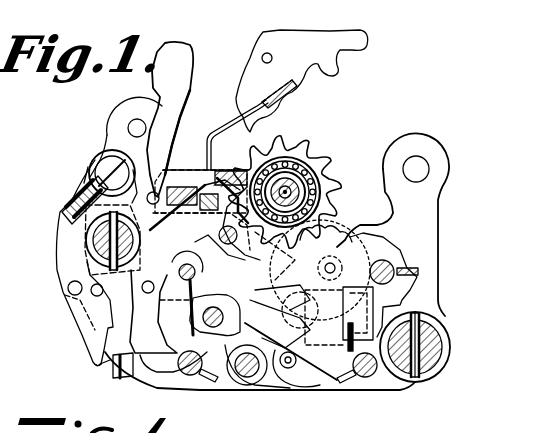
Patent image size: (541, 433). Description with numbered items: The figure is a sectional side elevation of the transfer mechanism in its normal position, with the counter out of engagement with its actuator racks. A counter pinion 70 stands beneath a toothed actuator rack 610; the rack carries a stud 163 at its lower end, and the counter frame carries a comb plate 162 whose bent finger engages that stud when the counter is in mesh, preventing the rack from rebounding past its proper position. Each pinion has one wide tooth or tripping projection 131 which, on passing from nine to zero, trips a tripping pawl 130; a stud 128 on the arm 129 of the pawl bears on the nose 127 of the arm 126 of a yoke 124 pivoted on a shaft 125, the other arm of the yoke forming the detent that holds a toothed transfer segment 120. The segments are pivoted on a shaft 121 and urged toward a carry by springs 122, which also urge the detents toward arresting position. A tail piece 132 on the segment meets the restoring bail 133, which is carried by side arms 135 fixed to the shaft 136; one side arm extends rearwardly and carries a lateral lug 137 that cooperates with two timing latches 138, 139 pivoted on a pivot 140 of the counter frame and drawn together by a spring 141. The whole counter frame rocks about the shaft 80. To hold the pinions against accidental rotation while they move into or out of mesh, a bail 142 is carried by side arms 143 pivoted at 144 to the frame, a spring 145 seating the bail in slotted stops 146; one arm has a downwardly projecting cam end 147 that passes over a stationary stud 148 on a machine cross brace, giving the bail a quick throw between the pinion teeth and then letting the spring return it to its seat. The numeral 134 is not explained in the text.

The actuator rack 610 is at (370, 47).
The stud 163 is at (263, 54).
The comb plate 162 is at (290, 94).
The counter pinion 70 is at (284, 137).
The tripping projection 131 is at (226, 180).
The tripping pawl 130 is at (178, 119).
The stud 128 is at (201, 185).
The nose 127 is at (153, 193).
The spring 141 is at (72, 305).
The timing latch 138 is at (85, 349).
The lateral lug 137 is at (115, 365).
The timing latch 139 is at (135, 376).
The pivot 140 is at (103, 160).
The shaft 80 is at (95, 245).
The yoke 124 is at (175, 330).
The arm 129 is at (177, 280).
The slotted stop 146 is at (200, 207).
The arm 126 is at (183, 265).
The bail 142 is at (237, 230).
The shaft 125 is at (215, 315).
The spring 145 is at (320, 270).
The side arm 143 is at (275, 256).
The toothed segment 120 is at (340, 233).
The spring 122 is at (342, 262).
The cam 134 is at (286, 306).
The pivot 144 is at (291, 340).
The shaft 121 is at (329, 320).
The shaft 136 is at (438, 362).
The tail piece 132 is at (247, 364).
The restoring bail 133 is at (235, 385).
The side arm 135 is at (252, 392).
The cam end 147 is at (300, 382).
The stationary stud 148 is at (292, 368).